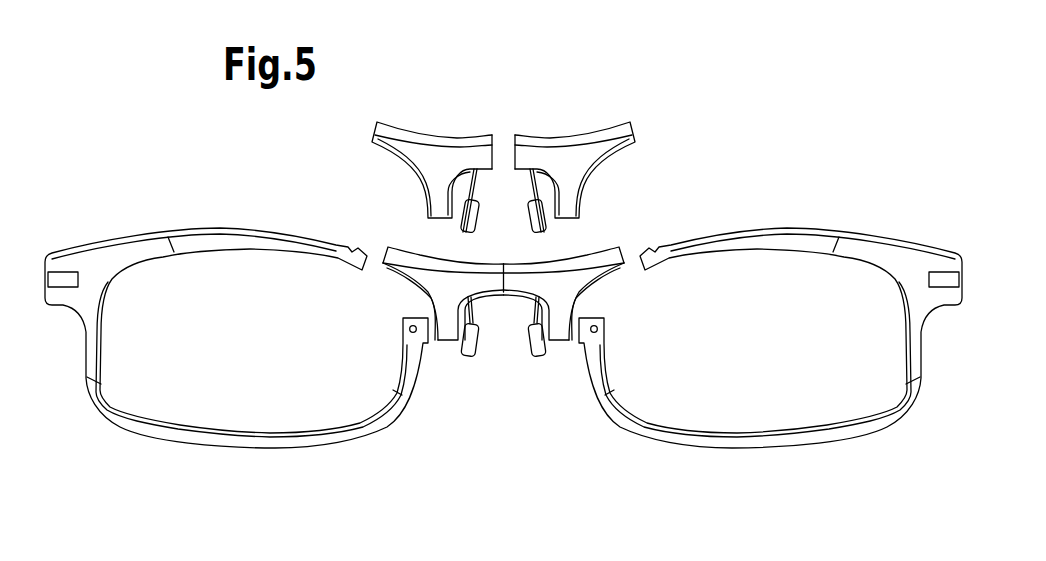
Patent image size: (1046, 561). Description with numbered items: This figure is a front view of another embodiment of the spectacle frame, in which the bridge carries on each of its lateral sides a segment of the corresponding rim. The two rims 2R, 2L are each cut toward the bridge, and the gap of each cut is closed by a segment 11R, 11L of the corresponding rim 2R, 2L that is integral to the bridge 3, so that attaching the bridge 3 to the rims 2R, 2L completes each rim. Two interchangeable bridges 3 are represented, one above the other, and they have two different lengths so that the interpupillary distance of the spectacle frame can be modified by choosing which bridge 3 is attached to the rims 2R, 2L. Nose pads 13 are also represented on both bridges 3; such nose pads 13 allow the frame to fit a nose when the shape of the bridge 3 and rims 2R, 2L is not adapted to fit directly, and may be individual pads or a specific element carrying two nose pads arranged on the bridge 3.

The rim 2R is at (223, 242).
The rim 2L is at (791, 240).
The bridge 3 is at (565, 152).
The segment 11R is at (438, 284).
The segment 11L is at (565, 284).
The nose pads 13 is at (460, 228).